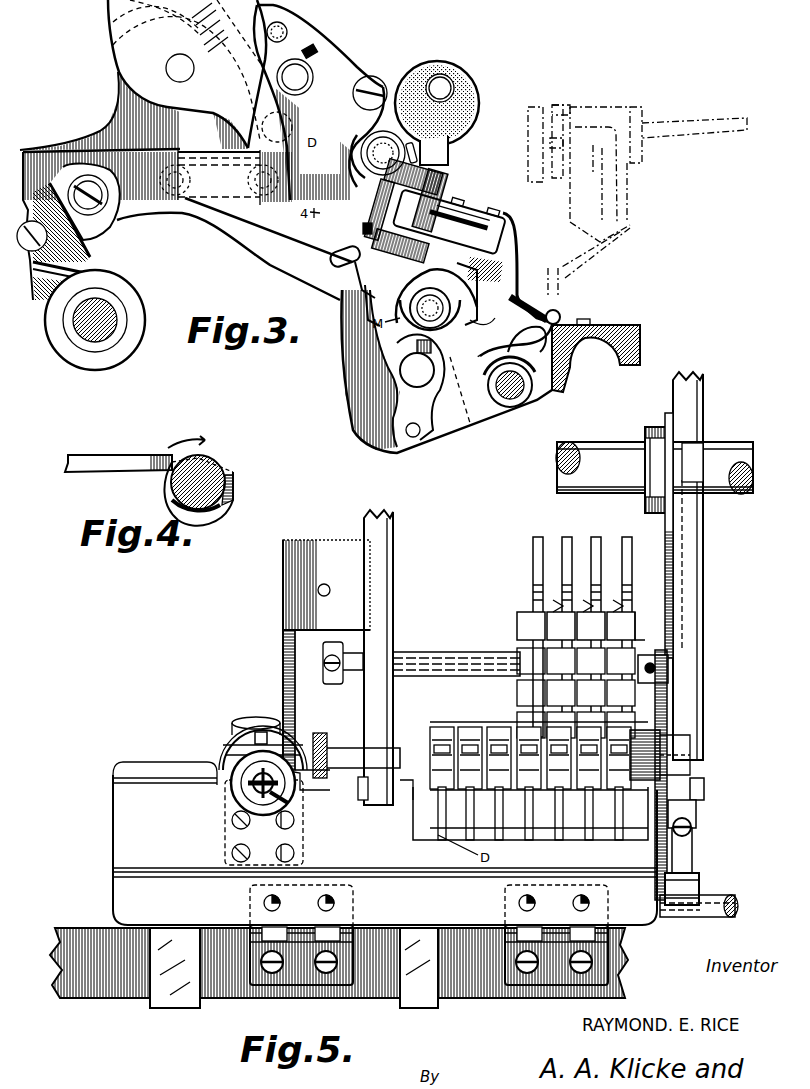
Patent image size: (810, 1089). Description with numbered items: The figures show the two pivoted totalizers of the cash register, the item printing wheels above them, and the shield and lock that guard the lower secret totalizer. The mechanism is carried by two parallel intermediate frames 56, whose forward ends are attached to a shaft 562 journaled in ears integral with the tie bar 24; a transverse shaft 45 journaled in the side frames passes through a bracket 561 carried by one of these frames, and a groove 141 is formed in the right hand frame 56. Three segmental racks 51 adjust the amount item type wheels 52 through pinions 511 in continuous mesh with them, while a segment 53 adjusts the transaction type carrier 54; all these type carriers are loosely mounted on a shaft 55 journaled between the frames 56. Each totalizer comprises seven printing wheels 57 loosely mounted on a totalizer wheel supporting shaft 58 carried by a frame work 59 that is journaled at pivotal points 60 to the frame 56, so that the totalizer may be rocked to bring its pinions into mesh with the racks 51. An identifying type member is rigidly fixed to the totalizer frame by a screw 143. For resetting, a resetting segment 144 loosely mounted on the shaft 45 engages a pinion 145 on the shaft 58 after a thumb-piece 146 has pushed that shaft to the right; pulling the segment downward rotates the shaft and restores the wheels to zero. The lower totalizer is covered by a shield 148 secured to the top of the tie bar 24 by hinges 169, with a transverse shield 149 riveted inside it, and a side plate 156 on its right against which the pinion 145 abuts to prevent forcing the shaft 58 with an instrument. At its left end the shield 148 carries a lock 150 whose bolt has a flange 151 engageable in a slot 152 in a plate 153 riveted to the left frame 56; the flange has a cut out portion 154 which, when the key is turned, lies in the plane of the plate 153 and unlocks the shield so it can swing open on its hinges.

In FIG. 3, the tie bar 24 is at (623, 333).
In FIG. 5, the tie bar 24 is at (385, 990).
In FIG. 3, the transverse shaft 45 is at (110, 300).
In FIG. 5, the transverse shaft 45 is at (732, 466).
In FIG. 5, the segmental rack 51 is at (628, 540).
In FIG. 5, the item type wheel 52 is at (613, 612).
In FIG. 5, the segment 53 is at (537, 565).
In FIG. 5, the transaction type carrier 54 is at (523, 618).
In FIG. 3, the shaft 55 is at (312, 74).
In FIG. 5, the shaft 55 is at (655, 660).
In FIG. 3, the intermediate frame 56 is at (338, 381).
In FIG. 5, the intermediate frame 56 is at (705, 660).
In FIG. 5, the printing wheels 57 is at (478, 728).
In FIG. 3, the totalizer wheel supporting shaft 58 is at (362, 133).
In FIG. 5, the totalizer wheel supporting shaft 58 is at (340, 750).
In FIG. 3, the frame work 59 is at (468, 432).
In FIG. 5, the frame work 59 is at (690, 702).
In FIG. 3, the pivotal points 60 is at (380, 201).
In FIG. 5, the pivotal points 60 is at (360, 790).
In FIG. 3, the groove 141 is at (137, 48).
In FIG. 5, the screw 143 is at (410, 832).
In FIG. 5, the resetting segment 144 is at (672, 565).
In FIG. 5, the pinion 145 is at (675, 730).
In FIG. 3, the thumb-piece 146 is at (370, 160).
In FIG. 5, the thumb-piece 146 is at (316, 735).
In FIG. 3, the shield 148 is at (514, 262).
In FIG. 5, the shield 148 is at (385, 843).
In FIG. 3, the transverse shield 149 is at (512, 222).
In FIG. 3, the lock 150 is at (437, 188).
In FIG. 4, the lock 150 is at (232, 478).
In FIG. 5, the lock 150 is at (235, 765).
In FIG. 3, the flange 151 is at (345, 298).
In FIG. 4, the flange 151 is at (205, 448).
In FIG. 3, the slot 152 is at (343, 259).
In FIG. 3, the plate 153 is at (256, 206).
In FIG. 4, the plate 153 is at (140, 465).
In FIG. 5, the plate 153 is at (326, 655).
In FIG. 3, the cut out portion 154 is at (365, 318).
In FIG. 4, the cut out portion 154 is at (172, 508).
In FIG. 5, the cut out portion 154 is at (240, 735).
In FIG. 3, the side plate 156 is at (494, 330).
In FIG. 5, the side plate 156 is at (695, 838).
In FIG. 3, the hinges 169 is at (606, 325).
In FIG. 5, the hinges 169 is at (505, 928).
In FIG. 5, the pinion 511 is at (638, 640).
In FIG. 3, the bracket 561 is at (87, 222).
In FIG. 3, the shaft 562 is at (518, 400).
In FIG. 5, the shaft 562 is at (700, 908).